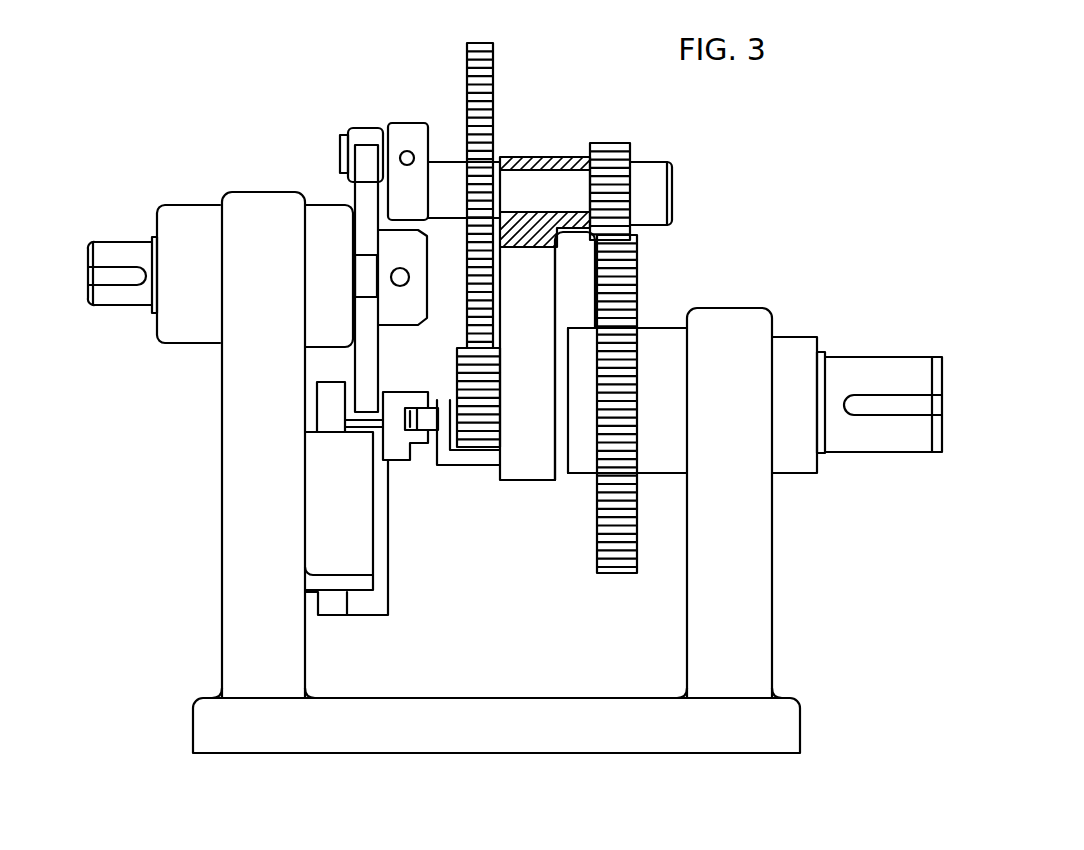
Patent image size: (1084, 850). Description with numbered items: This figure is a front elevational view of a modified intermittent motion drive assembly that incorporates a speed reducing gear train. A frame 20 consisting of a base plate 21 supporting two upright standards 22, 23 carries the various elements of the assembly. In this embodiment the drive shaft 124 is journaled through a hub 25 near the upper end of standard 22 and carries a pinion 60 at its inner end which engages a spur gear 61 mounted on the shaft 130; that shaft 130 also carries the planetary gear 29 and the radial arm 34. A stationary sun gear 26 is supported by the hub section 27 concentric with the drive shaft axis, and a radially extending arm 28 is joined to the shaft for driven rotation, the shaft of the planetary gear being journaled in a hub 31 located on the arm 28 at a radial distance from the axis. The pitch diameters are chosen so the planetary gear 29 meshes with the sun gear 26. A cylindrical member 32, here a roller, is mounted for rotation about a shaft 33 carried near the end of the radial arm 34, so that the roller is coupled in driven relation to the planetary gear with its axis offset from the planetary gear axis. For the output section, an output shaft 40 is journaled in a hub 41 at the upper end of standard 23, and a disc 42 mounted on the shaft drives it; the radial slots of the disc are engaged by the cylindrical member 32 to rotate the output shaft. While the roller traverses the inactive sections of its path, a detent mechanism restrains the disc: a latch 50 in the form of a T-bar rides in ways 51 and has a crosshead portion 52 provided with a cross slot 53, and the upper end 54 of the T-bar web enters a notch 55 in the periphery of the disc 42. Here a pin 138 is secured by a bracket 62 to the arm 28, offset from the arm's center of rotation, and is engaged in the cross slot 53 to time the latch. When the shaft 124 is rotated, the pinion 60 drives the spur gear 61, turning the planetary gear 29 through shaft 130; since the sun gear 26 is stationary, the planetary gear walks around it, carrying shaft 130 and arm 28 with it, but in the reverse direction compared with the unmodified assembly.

The frame 20 is at (202, 522).
The base plate 21 is at (235, 745).
The upright standard 22 is at (772, 600).
The upright standard 23 is at (222, 598).
The hub 25 is at (662, 328).
The stationary sun gear 26 is at (632, 268).
The hub section 27 is at (578, 472).
The radially extending arm 28 is at (527, 476).
The planetary gear 29 is at (612, 143).
The hub 31 is at (575, 157).
The cylindrical member 32 is at (362, 130).
The shaft 33 is at (340, 152).
The radial arm 34 is at (407, 123).
The output shaft 40 is at (112, 243).
The hub 41 is at (185, 345).
The disc 42 is at (373, 357).
The latch 50 is at (390, 594).
The ways 51 is at (365, 546).
The crosshead portion 52 is at (393, 422).
The cross slot 53 is at (414, 408).
The upper end of T-bar web 54 is at (365, 432).
The notch 55 is at (360, 264).
The pinion 60 is at (495, 382).
The spur gear 61 is at (466, 256).
The bracket 62 is at (467, 455).
The drive shaft 124 is at (869, 357).
The shaft 130 is at (533, 160).
The pin 138 is at (418, 433).